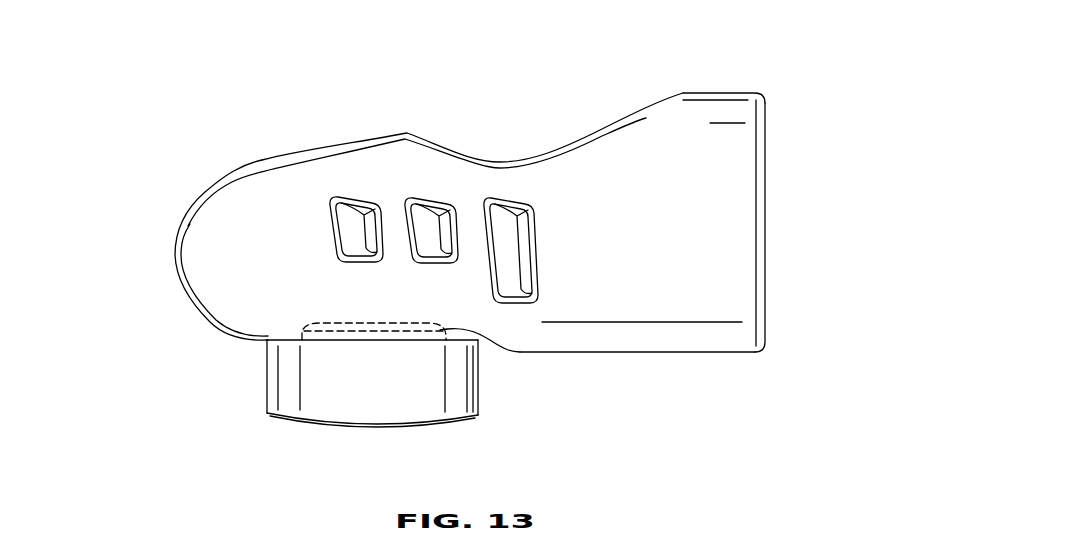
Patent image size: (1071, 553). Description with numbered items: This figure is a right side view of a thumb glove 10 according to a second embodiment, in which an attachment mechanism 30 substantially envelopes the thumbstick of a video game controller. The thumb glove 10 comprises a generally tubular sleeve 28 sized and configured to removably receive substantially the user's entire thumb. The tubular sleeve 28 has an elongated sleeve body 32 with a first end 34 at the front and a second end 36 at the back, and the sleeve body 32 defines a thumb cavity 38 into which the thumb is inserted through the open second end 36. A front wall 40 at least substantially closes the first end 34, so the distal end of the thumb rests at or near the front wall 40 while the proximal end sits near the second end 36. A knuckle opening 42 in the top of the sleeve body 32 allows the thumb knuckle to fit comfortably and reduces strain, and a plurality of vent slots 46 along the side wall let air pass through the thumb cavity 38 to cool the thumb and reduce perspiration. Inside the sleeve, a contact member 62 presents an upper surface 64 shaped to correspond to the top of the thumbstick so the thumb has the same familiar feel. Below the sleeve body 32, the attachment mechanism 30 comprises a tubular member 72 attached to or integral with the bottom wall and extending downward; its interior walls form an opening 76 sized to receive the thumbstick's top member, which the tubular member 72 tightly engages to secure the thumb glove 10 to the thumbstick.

The thumb glove 10 is at (244, 101).
The tubular sleeve 28 is at (714, 144).
The attachment mechanism 30 is at (235, 392).
The sleeve body 32 is at (552, 337).
The first end 34 is at (175, 187).
The second end 36 is at (762, 81).
The thumb cavity 38 is at (779, 233).
The front wall 40 is at (197, 257).
The knuckle opening 42 is at (496, 150).
The vent slots 46 is at (355, 200).
The contact member 62 is at (500, 338).
The upper surface 64 is at (339, 313).
The tubular member 72 is at (402, 415).
The opening 76 is at (312, 429).